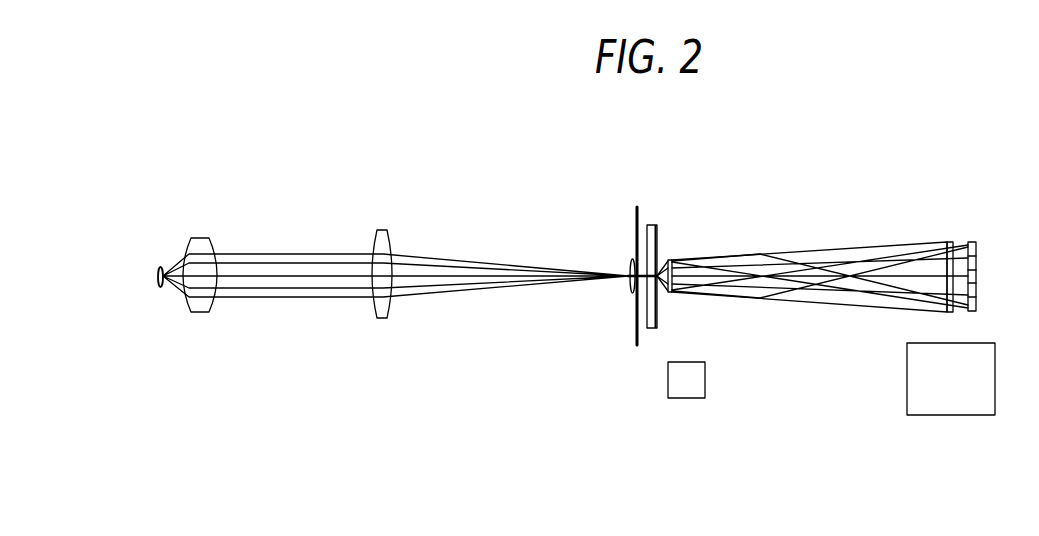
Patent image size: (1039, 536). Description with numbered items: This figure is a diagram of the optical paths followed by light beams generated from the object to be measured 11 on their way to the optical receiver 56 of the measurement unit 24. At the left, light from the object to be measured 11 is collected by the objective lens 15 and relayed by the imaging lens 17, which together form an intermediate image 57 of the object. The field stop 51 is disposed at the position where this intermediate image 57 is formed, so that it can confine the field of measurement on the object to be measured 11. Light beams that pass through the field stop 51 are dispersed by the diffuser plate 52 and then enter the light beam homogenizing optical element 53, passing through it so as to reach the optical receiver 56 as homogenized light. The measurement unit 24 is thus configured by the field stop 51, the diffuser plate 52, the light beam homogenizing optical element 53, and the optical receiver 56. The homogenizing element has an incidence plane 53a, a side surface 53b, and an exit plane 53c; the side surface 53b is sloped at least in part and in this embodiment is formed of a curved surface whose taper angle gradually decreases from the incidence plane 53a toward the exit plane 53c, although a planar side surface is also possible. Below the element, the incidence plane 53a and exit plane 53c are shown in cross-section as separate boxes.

The object to be measured 11 is at (158, 266).
The objective lens 15 is at (198, 238).
The imaging lens 17 is at (382, 230).
The measurement unit 24 is at (815, 158).
The field stop 51 is at (636, 230).
The diffuser plate 52 is at (652, 225).
The light beam homogenizing optical element 53 is at (829, 322).
The incidence plane 53a is at (663, 262).
The side surface 53b is at (810, 242).
The exit plane 53c is at (951, 322).
The optical receiver 56 is at (973, 245).
The intermediate image 57 is at (630, 289).